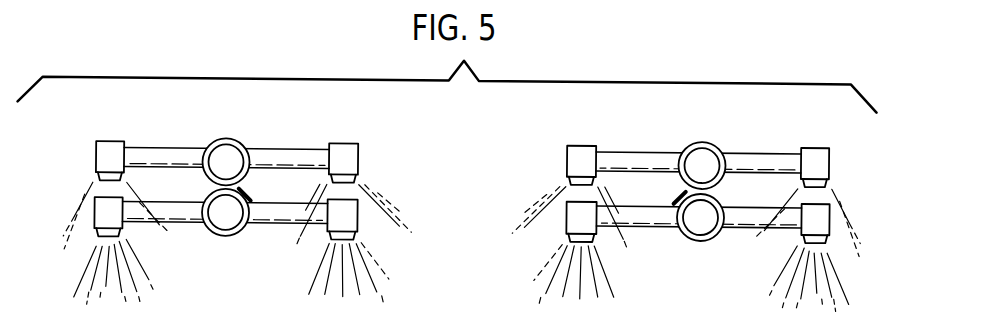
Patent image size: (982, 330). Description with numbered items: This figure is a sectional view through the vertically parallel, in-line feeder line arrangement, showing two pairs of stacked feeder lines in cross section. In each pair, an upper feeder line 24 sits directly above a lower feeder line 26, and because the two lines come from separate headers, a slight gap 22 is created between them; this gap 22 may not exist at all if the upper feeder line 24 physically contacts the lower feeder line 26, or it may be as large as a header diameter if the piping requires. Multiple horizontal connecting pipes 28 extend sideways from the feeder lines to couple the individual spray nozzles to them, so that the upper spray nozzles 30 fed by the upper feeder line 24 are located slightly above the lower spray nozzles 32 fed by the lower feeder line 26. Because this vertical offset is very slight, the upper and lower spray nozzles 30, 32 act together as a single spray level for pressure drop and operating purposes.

The gap 22 is at (238, 190).
The upper feeder line 24 is at (213, 144).
The lower feeder line 26 is at (232, 240).
The horizontal connecting pipe 28 is at (277, 152).
The upper spray nozzle 30 is at (344, 145).
The lower spray nozzle 32 is at (360, 236).